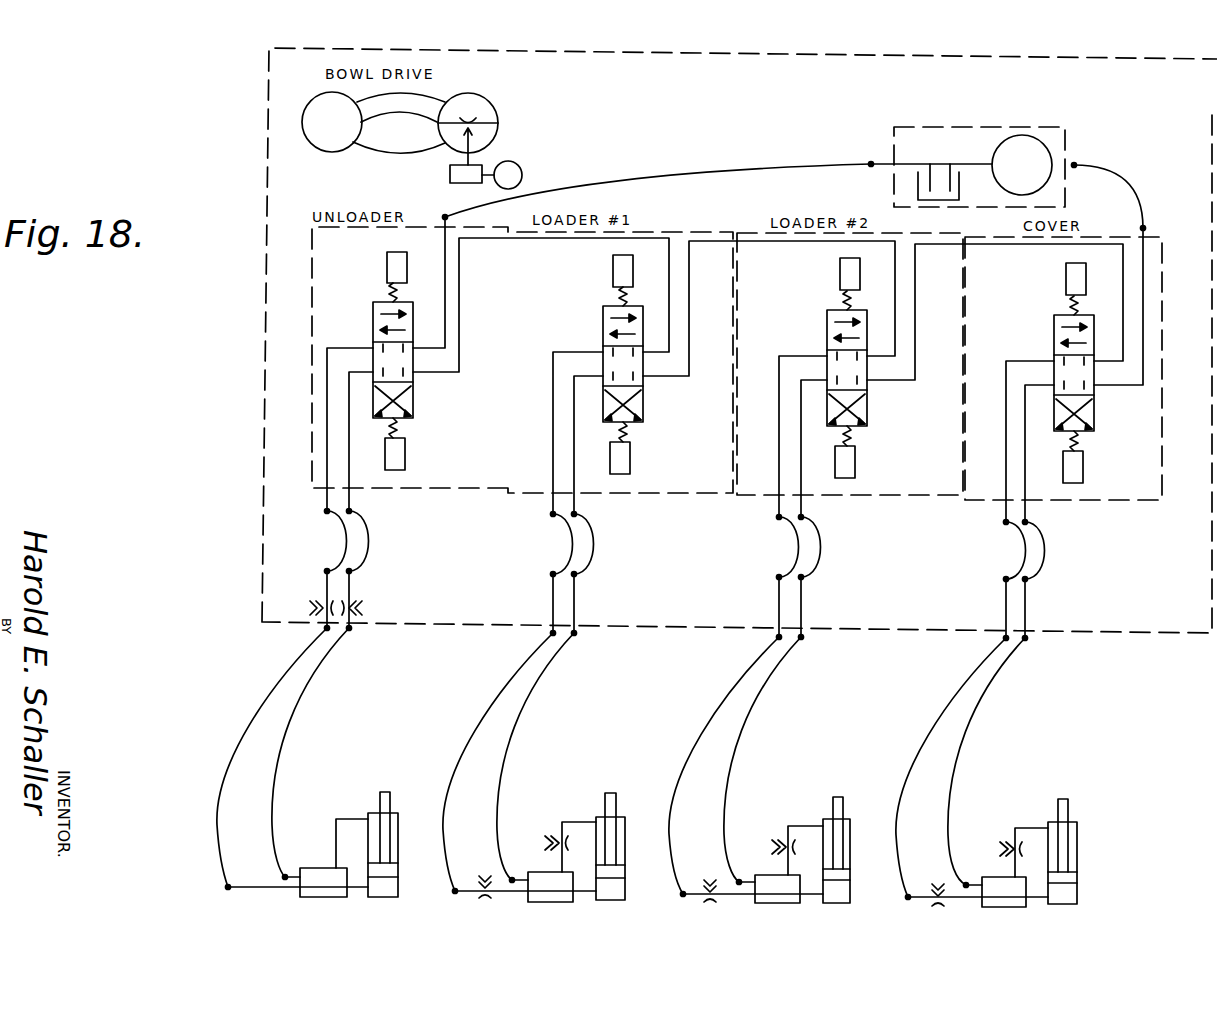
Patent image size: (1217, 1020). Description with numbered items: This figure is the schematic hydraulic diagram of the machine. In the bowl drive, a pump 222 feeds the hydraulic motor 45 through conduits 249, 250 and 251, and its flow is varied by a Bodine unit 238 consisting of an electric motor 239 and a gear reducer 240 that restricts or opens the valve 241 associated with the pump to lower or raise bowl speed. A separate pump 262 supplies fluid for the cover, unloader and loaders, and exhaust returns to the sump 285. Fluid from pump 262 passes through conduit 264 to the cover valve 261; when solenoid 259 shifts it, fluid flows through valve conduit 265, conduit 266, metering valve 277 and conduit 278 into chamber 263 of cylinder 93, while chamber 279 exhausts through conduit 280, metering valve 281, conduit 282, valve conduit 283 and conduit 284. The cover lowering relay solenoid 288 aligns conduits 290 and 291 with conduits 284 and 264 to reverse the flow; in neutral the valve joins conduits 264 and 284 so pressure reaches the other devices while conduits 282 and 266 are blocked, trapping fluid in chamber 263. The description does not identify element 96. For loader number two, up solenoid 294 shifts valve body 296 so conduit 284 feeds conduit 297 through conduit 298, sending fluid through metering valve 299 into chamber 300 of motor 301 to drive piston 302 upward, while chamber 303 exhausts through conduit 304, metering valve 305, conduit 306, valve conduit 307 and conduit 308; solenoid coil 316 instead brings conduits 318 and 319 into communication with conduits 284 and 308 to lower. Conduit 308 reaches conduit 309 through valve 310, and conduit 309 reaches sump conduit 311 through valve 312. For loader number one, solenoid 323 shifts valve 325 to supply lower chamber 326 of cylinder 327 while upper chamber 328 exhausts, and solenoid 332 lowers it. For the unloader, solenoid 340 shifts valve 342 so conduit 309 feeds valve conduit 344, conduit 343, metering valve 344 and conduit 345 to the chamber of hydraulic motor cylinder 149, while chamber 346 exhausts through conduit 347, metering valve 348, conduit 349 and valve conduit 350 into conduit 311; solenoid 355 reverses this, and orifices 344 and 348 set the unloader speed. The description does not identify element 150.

The hydraulic motor 45 is at (318, 147).
The pump 222 is at (497, 118).
The valve 241 is at (490, 104).
The conduit 251 is at (368, 101).
The conduit 250 is at (372, 125).
The conduit 249 is at (362, 150).
The Bodine unit 238 is at (492, 153).
The gear reducer 240 is at (450, 175).
The electric motor 239 is at (523, 169).
The pump 262 is at (1054, 104).
The sump 285 is at (894, 182).
The conduit 264 is at (1137, 183).
The conduit 311 is at (442, 244).
The solenoid 355 is at (387, 268).
The valve 342 is at (373, 325).
The valve 312 is at (416, 385).
The valve conduit 350 is at (414, 404).
The metering valve 344 is at (414, 420).
The solenoid 340 is at (405, 460).
The conduit 343 is at (326, 431).
The conduit 349 is at (352, 498).
The metering valve 348 is at (358, 608).
The conduit 345 is at (226, 744).
The conduit 347 is at (272, 790).
The piston rod 150 is at (388, 792).
The chamber 346 is at (398, 816).
The hydraulic motor cylinder 149 is at (398, 848).
The conduit 309 is at (515, 245).
The solenoid 332 is at (613, 258).
The valve 325 is at (603, 326).
The valve 310 is at (643, 390).
The solenoid 323 is at (630, 462).
The upper chamber 328 is at (626, 818).
The cylinder 327 is at (618, 852).
The lower chamber 326 is at (610, 898).
The conduit 308 is at (745, 248).
The conduit 284 is at (928, 248).
The solenoid coil 316 is at (840, 268).
The conduit 319 is at (840, 308).
The valve body 296 is at (827, 326).
The conduit 318 is at (827, 338).
The conduit 298 is at (870, 405).
The valve conduit 307 is at (866, 414).
The up solenoid 294 is at (856, 466).
The conduit 297 is at (778, 443).
The conduit 306 is at (750, 700).
The metering valve 299 is at (714, 906).
The conduit 304 is at (796, 822).
The metering valve 305 is at (770, 844).
The piston 302 is at (838, 797).
The chamber 303 is at (852, 826).
The motor 301 is at (850, 844).
The chamber 300 is at (844, 900).
The solenoid 259 is at (1064, 270).
The conduit 290 is at (1068, 316).
The conduit 291 is at (1056, 339).
The valve conduit 265 is at (1056, 410).
The valve conduit 283 is at (1090, 396).
The valve 261 is at (1094, 416).
The cover lowering relay solenoid 288 is at (1083, 464).
The conduit 266 is at (1004, 472).
The conduit 282 is at (980, 700).
The metering valve 277 is at (946, 870).
The conduit 280 is at (1030, 828).
The metering valve 281 is at (998, 850).
The piston rod 96 is at (1068, 804).
The chamber 279 is at (1077, 836).
The cylinder 93 is at (1078, 858).
The chamber 263 is at (1078, 892).
The conduit 278 is at (1030, 900).